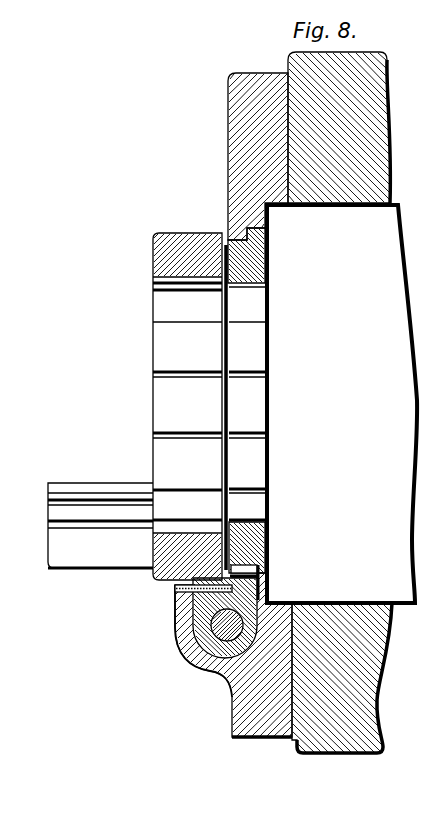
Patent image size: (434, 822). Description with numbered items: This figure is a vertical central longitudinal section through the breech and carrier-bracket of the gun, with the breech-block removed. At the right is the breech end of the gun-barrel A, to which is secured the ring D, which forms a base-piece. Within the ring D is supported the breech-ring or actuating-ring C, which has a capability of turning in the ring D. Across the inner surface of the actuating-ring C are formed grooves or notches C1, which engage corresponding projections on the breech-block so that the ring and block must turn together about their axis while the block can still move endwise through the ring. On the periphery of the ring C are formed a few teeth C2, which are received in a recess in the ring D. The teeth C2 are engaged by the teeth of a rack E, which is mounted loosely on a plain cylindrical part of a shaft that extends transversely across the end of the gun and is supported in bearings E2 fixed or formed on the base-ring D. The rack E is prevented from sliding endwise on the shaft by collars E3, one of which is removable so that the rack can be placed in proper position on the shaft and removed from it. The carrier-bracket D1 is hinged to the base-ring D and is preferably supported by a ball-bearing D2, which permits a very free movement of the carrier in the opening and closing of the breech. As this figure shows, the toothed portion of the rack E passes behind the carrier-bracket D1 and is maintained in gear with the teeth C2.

The breech end of the gun-barrel A is at (340, 402).
The ring forming a base-piece D is at (233, 405).
The carrier-bracket D1 is at (187, 406).
The ball-bearing D2 is at (100, 525).
The breech-ring or actuating-ring C is at (245, 414).
The grooves or notches C1 is at (249, 322).
The teeth C2 is at (258, 568).
The rack E is at (216, 618).
The bearings E2 is at (197, 667).
The collars E3 is at (227, 625).